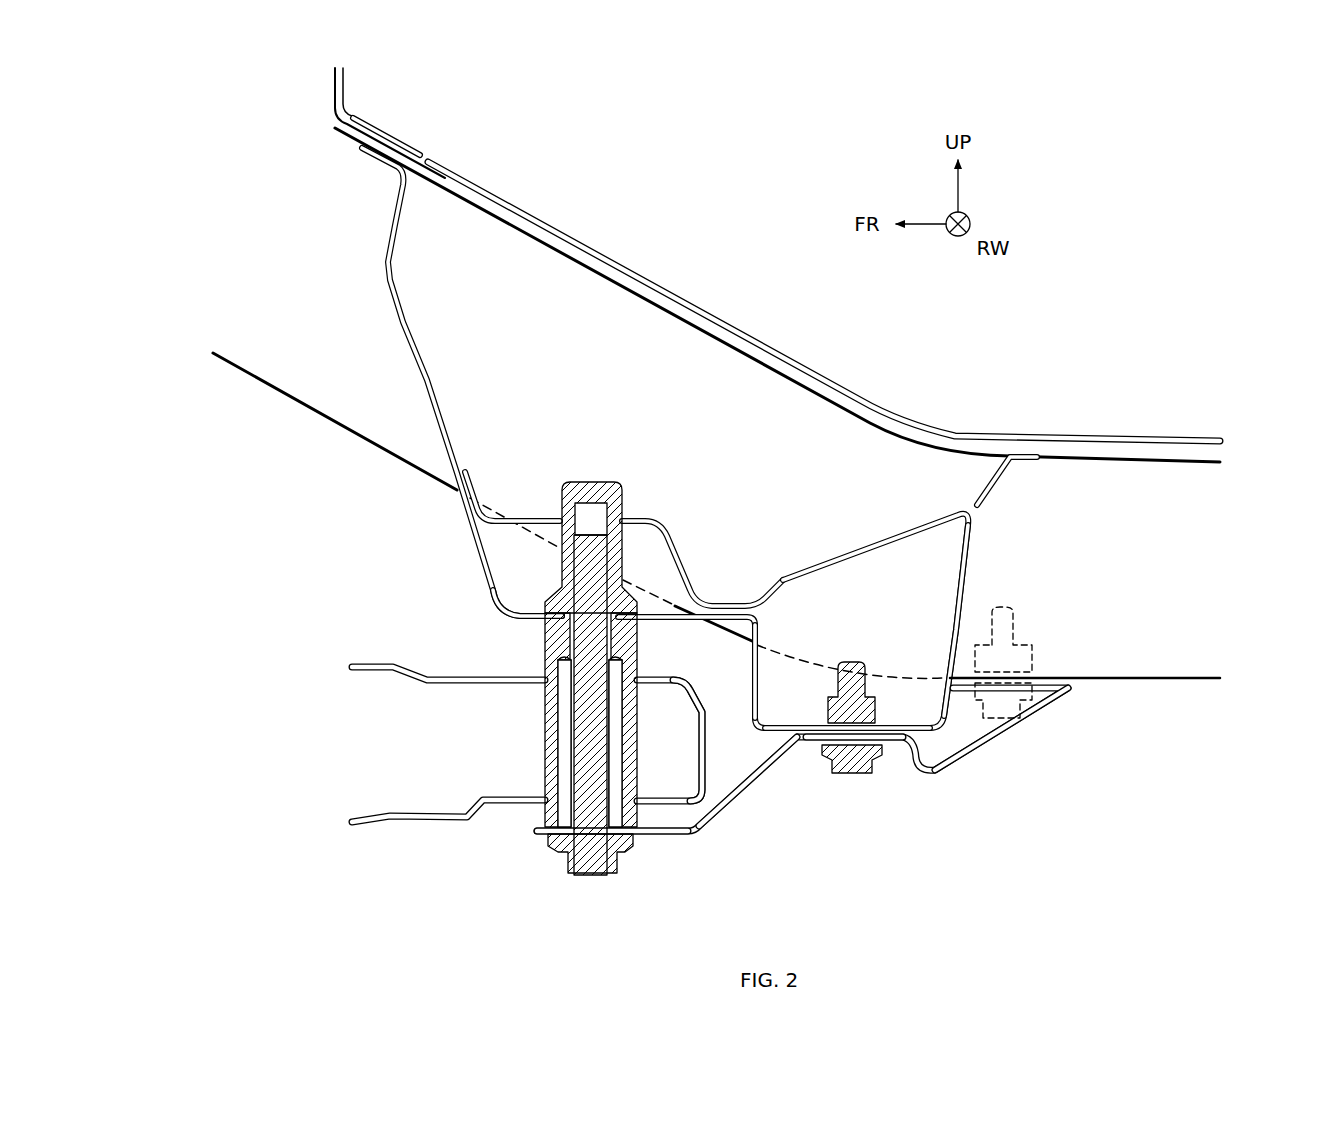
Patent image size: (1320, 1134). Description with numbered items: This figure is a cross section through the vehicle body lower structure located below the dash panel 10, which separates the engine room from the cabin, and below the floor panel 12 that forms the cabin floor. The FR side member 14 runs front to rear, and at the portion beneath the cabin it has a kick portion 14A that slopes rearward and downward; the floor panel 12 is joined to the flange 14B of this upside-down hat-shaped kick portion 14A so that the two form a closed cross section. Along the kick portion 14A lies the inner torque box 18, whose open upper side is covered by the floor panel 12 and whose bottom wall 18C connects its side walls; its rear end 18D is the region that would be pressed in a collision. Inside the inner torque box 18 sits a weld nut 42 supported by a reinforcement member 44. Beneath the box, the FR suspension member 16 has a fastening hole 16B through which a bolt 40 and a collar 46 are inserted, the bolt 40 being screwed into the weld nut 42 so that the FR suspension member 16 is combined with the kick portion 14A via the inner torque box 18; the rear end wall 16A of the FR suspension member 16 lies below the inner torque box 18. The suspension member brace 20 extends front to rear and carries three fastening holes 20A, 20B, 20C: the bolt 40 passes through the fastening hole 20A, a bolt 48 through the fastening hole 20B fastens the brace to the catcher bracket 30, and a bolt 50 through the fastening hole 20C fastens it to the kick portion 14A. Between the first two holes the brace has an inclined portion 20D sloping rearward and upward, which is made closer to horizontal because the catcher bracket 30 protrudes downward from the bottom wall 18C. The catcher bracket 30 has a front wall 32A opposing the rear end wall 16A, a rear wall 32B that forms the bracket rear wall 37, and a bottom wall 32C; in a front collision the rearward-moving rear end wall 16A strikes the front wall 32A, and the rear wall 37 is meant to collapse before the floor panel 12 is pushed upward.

The dash panel 10 is at (347, 103).
The floor panel 12 is at (440, 165).
The FR side member 14 is at (578, 515).
The kick portion 14A is at (277, 392).
The flange 14B is at (613, 283).
The FR suspension member 16 is at (734, 697).
The rear end wall 16A is at (707, 767).
The fastening hole 16B is at (563, 685).
The inner torque box 18 is at (722, 382).
The bottom wall 18C is at (527, 608).
The rear end 18D is at (1025, 461).
The suspension member brace 20 is at (815, 805).
The fastening hole 20A is at (587, 835).
The fastening hole 20B is at (847, 737).
The fastening hole 20C is at (1023, 727).
The inclined portion 20D is at (743, 790).
The catcher bracket 30 is at (863, 621).
The front wall 32A is at (748, 690).
The rear wall 32B is at (968, 588).
The bottom wall 32C is at (771, 724).
The rear wall 37 is at (1012, 620).
The bolt 40 is at (593, 867).
The weld nut 42 is at (564, 488).
The reinforcement member 44 is at (680, 550).
The collar 46 is at (557, 650).
The bolt 48 is at (847, 660).
The bolt 50 is at (1013, 620).